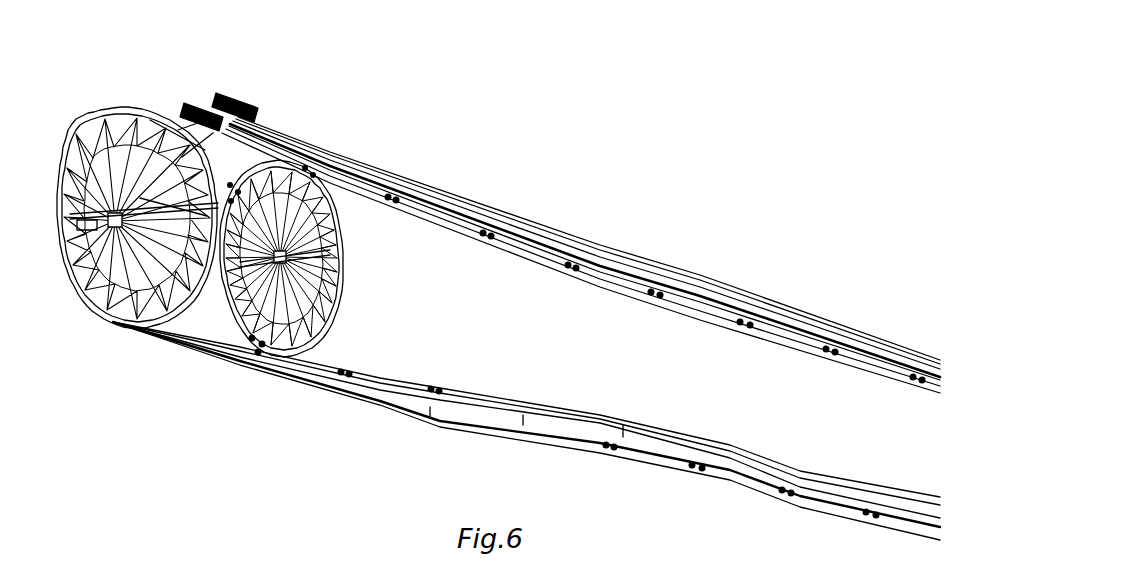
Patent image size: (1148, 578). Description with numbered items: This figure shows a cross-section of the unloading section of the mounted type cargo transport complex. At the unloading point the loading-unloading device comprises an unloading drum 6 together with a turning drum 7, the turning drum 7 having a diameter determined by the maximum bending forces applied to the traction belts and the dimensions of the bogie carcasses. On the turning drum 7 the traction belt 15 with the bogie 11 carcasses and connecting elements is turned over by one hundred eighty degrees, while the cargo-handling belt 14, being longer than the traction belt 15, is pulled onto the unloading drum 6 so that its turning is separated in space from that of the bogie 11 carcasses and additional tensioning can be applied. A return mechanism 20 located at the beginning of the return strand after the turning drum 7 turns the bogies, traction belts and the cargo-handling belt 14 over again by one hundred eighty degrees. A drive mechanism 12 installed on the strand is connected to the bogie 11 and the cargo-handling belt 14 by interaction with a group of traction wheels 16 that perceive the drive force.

The unloading drum 6 is at (203, 167).
The turning drum 7 is at (307, 170).
The bogie 11 is at (257, 358).
The drive mechanism 12 is at (233, 93).
The cargo-handling belt 14 is at (217, 350).
The traction belt 15 is at (360, 163).
The traction wheel 16 is at (257, 113).
The 180° return mechanism 20 is at (397, 398).